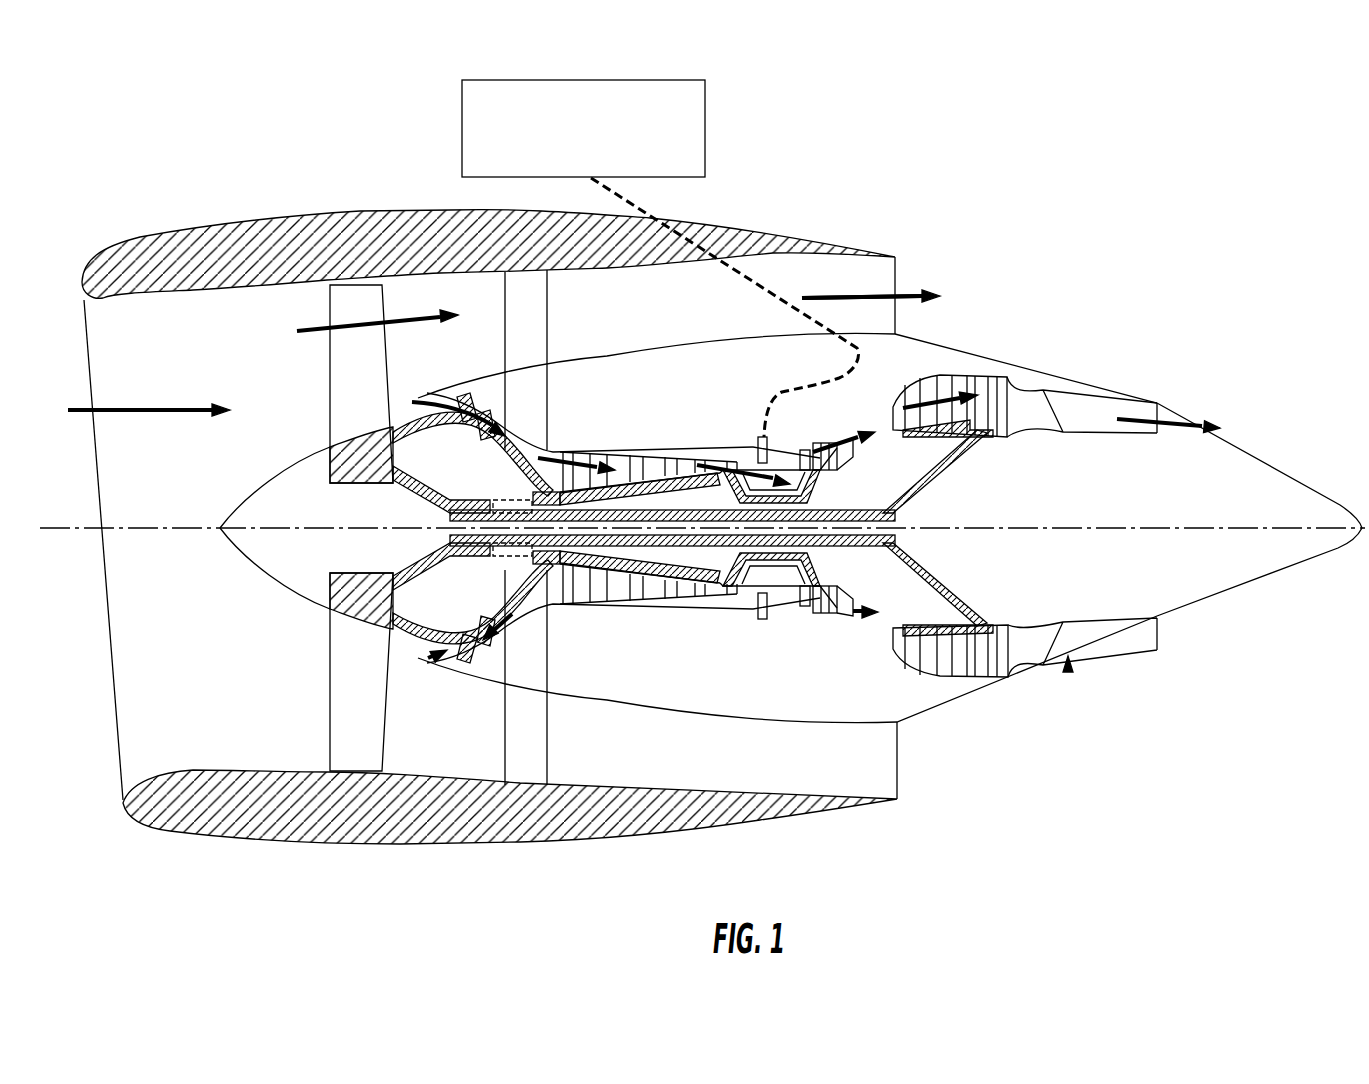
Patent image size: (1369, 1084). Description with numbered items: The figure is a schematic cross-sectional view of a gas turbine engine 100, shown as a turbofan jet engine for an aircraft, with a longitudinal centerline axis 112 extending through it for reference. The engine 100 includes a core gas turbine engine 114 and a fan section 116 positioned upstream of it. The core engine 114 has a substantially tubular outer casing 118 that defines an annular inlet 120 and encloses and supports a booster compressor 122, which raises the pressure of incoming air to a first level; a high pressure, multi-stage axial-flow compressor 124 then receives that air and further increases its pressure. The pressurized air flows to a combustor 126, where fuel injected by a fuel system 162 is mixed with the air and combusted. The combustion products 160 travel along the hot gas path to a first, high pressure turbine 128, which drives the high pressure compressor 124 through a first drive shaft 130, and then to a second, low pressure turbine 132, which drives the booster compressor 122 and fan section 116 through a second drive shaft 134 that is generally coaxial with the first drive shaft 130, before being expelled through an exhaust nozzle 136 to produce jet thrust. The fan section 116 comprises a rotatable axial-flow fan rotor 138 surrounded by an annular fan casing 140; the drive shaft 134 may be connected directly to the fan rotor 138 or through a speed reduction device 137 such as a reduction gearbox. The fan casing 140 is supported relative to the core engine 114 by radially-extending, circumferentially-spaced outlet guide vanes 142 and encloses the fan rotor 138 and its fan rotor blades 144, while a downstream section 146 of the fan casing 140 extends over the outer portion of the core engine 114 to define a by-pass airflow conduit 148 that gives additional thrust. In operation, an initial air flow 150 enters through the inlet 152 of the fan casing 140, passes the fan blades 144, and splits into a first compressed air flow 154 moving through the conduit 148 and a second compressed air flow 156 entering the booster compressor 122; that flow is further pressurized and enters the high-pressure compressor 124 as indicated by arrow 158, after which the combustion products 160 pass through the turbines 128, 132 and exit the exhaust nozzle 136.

The gas turbine engine 100 is at (702, 473).
The longitudinal centerline axis 112 is at (1098, 523).
The core gas turbine engine 114 is at (740, 398).
The fan section 116 is at (377, 190).
The outer casing 118 is at (733, 718).
The annular inlet 120 is at (427, 657).
The booster compressor 122 is at (503, 608).
The high pressure compressor 124 is at (583, 593).
The combustor 126 is at (783, 600).
The first turbine 128 is at (880, 610).
The first drive shaft 130 is at (830, 470).
The second turbine 132 is at (1068, 670).
The second drive shaft 134 is at (515, 500).
The exhaust nozzle 136 is at (1157, 407).
The speed reduction device 137 is at (515, 470).
The fan rotor 138 is at (393, 487).
The fan casing 140 is at (377, 842).
The outlet guide vanes 142 is at (550, 307).
The fan rotor blades 144 is at (330, 705).
The downstream section 146 is at (790, 236).
The by-pass airflow conduit 148 is at (712, 312).
The initial air flow 150 is at (150, 408).
The inlet 152 is at (122, 785).
The first compressed air flow 154 is at (343, 323).
The second compressed air flow 156 is at (427, 397).
The air flow into the high-pressure compressor 158 is at (570, 450).
The combustion products 160 is at (818, 437).
The fuel system 162 is at (676, 102).